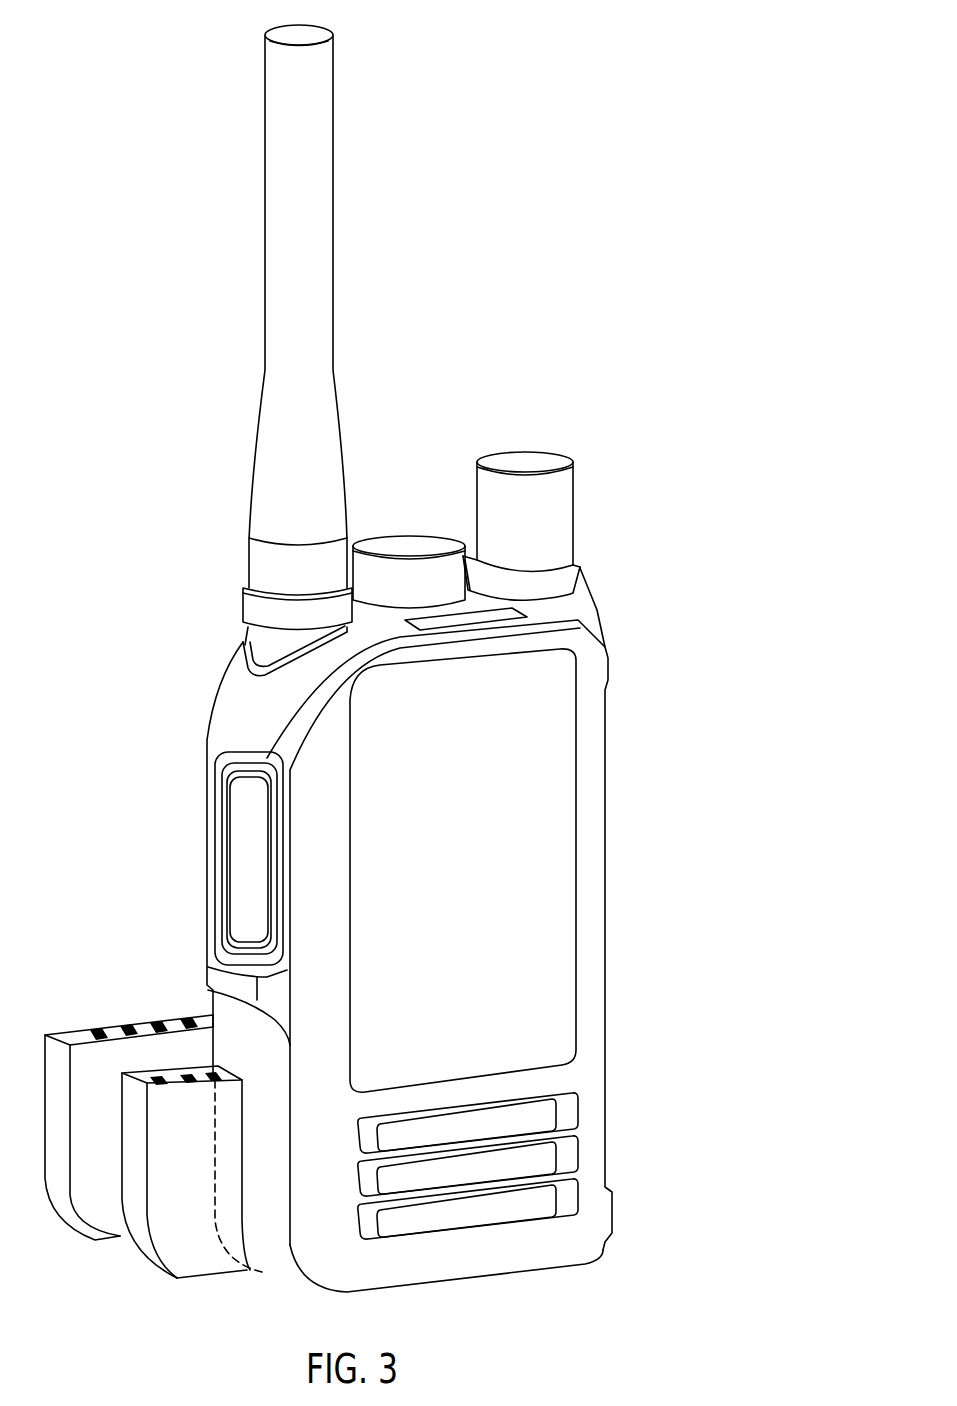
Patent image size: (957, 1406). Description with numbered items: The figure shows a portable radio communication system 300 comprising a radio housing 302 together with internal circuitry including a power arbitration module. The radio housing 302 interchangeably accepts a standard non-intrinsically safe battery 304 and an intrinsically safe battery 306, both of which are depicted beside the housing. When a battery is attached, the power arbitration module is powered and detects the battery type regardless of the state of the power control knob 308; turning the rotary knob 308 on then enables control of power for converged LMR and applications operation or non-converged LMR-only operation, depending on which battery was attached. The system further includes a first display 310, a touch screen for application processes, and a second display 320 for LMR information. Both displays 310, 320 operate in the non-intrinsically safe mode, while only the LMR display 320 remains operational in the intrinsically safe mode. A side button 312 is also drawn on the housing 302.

The portable radio communication system 300 is at (697, 410).
The radio housing 302 is at (606, 843).
The standard non-intrinsically safe battery 304 is at (115, 1025).
The intrinsically safe battery 306 is at (212, 1273).
The power control knob 308 is at (522, 450).
The first display 310 is at (477, 618).
The push-to-talk button 312 is at (243, 865).
The second display 320 is at (550, 744).